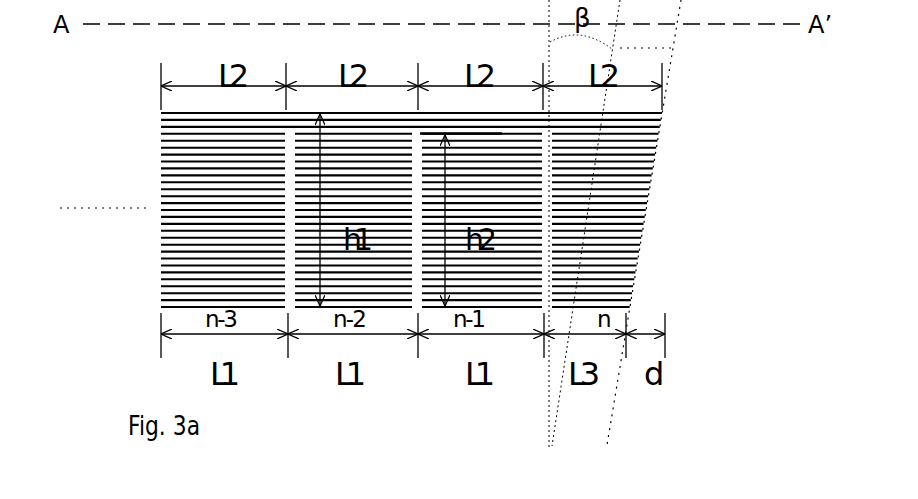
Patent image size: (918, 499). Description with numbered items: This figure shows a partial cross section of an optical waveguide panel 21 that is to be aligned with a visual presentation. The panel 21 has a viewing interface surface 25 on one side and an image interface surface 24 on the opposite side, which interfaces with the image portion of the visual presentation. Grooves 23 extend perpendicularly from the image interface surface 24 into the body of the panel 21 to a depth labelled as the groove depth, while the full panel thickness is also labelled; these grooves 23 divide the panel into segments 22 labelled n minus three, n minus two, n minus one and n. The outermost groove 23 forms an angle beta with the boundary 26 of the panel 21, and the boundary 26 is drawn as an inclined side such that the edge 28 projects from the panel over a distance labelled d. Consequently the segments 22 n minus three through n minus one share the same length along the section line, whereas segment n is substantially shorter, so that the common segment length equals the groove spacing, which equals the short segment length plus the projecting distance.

The optical waveguide panel 21 is at (148, 178).
The segments 22 is at (228, 285).
The grooves 23 is at (297, 280).
The image interface surface 24 is at (153, 307).
The viewing interface surface 25 is at (175, 107).
The boundary 26 is at (652, 228).
The edge 28 is at (667, 113).